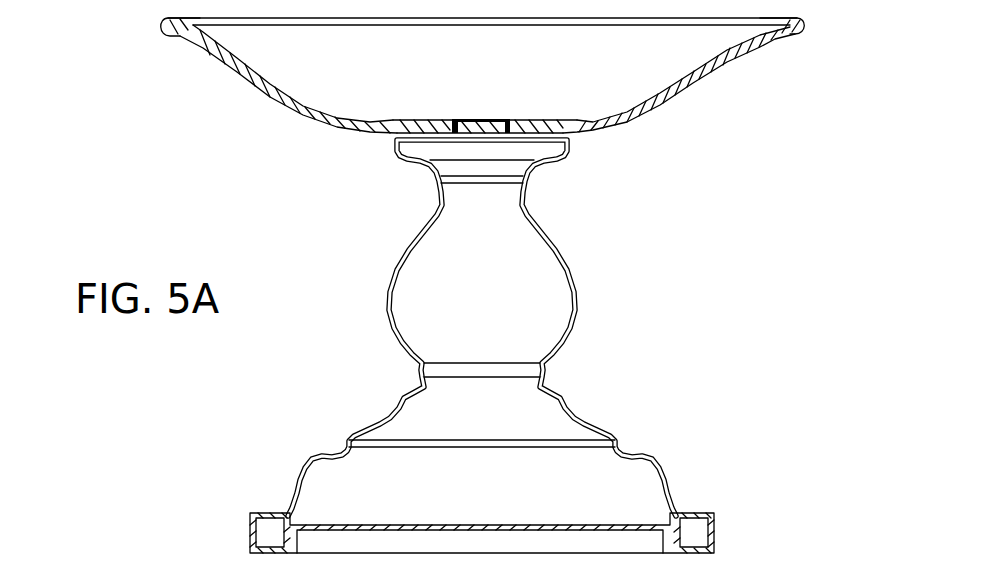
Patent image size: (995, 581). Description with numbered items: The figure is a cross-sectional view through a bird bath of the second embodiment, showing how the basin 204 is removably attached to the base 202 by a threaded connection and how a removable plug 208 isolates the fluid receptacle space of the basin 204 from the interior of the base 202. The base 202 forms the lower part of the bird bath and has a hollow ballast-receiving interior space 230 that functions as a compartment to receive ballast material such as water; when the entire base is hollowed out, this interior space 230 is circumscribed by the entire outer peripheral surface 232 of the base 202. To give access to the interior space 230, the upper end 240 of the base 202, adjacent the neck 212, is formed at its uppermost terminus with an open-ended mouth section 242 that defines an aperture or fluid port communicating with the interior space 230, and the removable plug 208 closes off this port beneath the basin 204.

The base 202 is at (724, 496).
The basin 204 is at (240, 75).
The removable plug 208 is at (498, 119).
The neck 212 is at (592, 240).
The ballast-receiving interior space 230 is at (522, 487).
The outer peripheral surface 232 is at (388, 302).
The upper end 240 is at (370, 149).
The mouth section 242 is at (456, 128).